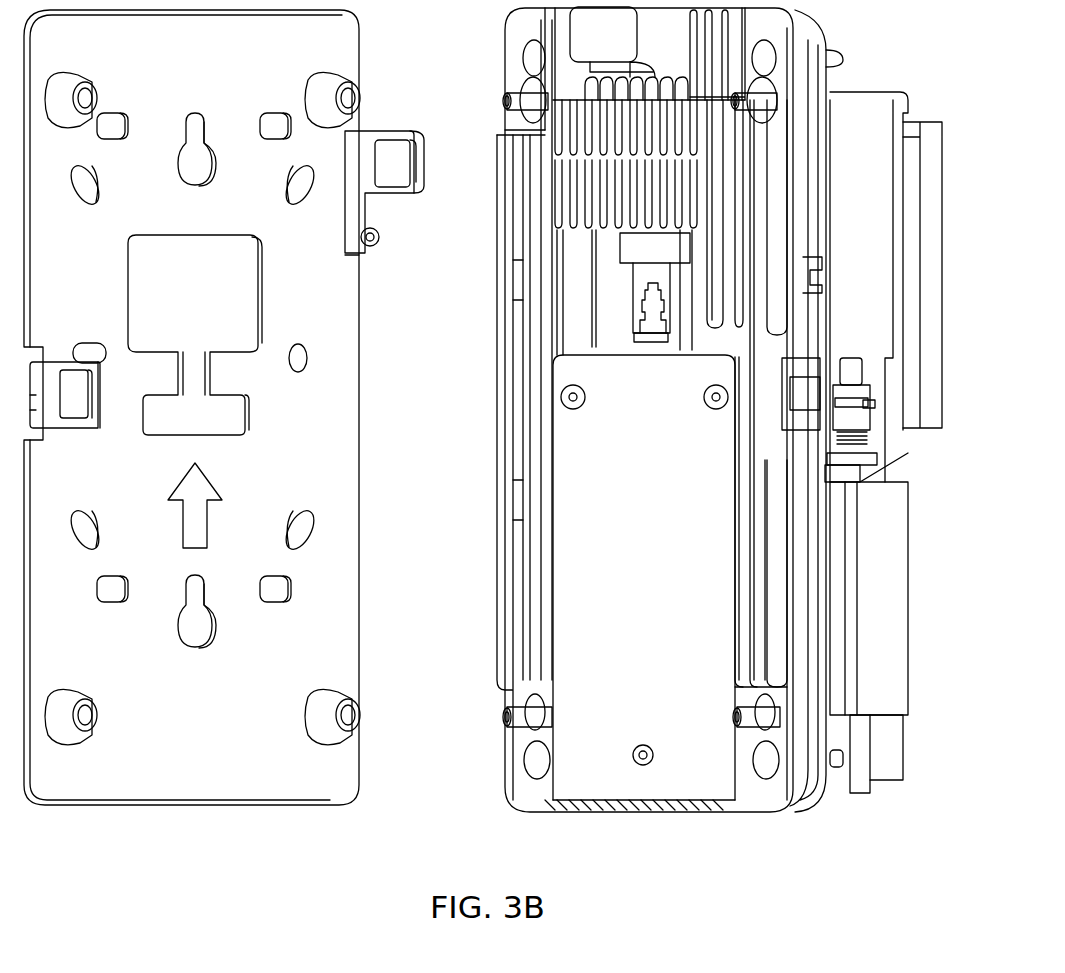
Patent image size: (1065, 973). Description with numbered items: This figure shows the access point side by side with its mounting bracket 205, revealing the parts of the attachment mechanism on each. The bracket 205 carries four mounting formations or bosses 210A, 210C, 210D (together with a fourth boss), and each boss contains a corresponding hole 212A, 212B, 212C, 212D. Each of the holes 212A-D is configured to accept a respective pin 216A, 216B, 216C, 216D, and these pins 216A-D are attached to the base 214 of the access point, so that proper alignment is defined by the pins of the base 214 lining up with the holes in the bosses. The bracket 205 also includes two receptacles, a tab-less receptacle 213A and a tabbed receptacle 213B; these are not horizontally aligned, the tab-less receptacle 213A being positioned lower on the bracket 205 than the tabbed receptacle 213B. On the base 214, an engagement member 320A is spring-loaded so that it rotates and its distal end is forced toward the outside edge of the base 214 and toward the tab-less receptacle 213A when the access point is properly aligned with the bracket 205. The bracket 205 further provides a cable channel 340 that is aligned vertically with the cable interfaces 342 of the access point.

The bracket 205 is at (243, 407).
The mounting formation or boss 210A is at (78, 80).
The mounting formation or boss 210C is at (78, 697).
The mounting formation or boss 210D is at (340, 697).
The hole 212A is at (97, 100).
The hole 212B is at (360, 100).
The hole 212C is at (97, 717).
The hole 212D is at (360, 717).
The tab-less receptacle 213A is at (67, 428).
The tabbed receptacle 213B is at (392, 198).
The cable channel 340 is at (193, 250).
The base 214 is at (694, 409).
The pin 216A is at (763, 98).
The pin 216B is at (505, 100).
The pin 216C is at (735, 716).
The pin 216D is at (505, 716).
The cable interfaces 342 is at (640, 315).
The engagement member 320A is at (810, 420).